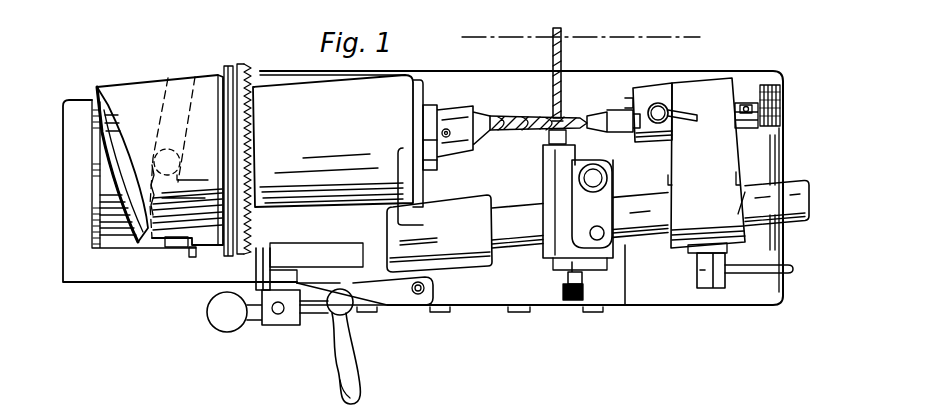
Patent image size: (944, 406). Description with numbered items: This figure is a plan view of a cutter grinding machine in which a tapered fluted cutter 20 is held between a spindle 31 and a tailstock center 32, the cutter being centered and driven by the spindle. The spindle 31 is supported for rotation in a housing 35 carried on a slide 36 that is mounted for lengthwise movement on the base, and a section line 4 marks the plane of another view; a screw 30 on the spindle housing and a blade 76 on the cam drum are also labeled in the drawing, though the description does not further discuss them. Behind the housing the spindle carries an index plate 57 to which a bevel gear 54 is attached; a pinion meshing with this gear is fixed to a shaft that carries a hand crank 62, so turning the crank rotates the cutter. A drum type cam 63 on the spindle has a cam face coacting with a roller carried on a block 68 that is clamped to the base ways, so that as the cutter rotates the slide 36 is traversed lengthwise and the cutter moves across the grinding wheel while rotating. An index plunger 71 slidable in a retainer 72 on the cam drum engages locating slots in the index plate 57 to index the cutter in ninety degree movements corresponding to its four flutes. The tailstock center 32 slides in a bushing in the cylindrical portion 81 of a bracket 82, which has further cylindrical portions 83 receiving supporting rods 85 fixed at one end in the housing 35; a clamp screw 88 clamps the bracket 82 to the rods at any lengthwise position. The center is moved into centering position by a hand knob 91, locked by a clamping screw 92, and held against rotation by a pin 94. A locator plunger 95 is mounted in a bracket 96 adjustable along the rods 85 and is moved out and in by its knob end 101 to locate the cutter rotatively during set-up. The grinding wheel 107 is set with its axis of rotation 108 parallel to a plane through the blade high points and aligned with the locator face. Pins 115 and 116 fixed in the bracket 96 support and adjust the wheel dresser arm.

The section line 4- 4 is at (50, 155).
The cutter 20 is at (522, 116).
The set screw 30 is at (447, 138).
The spindle 31 is at (447, 108).
The tailstock center 32 is at (612, 114).
The housing 35 is at (338, 171).
The slide 36 is at (490, 293).
The bevel gear 54 is at (246, 70).
The index plate 57 is at (228, 72).
The hand crank 62 is at (333, 377).
The drum type cam 63 is at (137, 82).
The block 68 is at (137, 266).
The index plunger 71 is at (237, 252).
The retainer 72 is at (213, 257).
The blade 76 is at (118, 108).
The cylindrical portion 81 is at (665, 90).
The bracket 82 is at (706, 165).
The cylindrical portion 83 is at (733, 203).
The supporting rod 85 is at (800, 205).
The clamp screw 88 is at (713, 290).
The hand knob 91 is at (780, 96).
The clamping screw 92 is at (682, 112).
The pin 94 is at (746, 104).
The locator plunger 95 is at (566, 281).
The bracket 96 is at (548, 190).
The knob end 101 is at (576, 302).
The grinding wheel 107 is at (551, 92).
The axis of rotation 108 is at (482, 38).
The pin 115 is at (592, 170).
The pin 116 is at (597, 226).